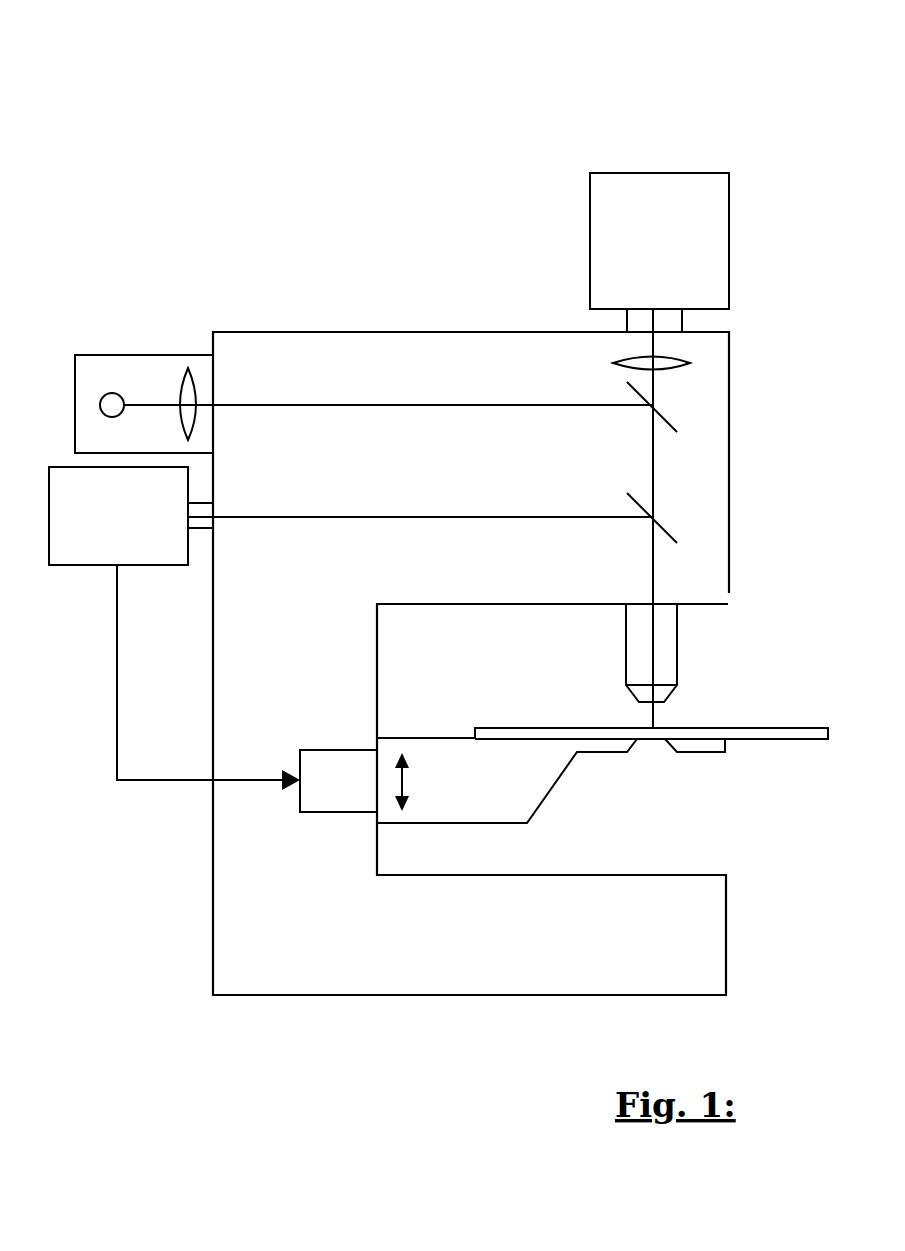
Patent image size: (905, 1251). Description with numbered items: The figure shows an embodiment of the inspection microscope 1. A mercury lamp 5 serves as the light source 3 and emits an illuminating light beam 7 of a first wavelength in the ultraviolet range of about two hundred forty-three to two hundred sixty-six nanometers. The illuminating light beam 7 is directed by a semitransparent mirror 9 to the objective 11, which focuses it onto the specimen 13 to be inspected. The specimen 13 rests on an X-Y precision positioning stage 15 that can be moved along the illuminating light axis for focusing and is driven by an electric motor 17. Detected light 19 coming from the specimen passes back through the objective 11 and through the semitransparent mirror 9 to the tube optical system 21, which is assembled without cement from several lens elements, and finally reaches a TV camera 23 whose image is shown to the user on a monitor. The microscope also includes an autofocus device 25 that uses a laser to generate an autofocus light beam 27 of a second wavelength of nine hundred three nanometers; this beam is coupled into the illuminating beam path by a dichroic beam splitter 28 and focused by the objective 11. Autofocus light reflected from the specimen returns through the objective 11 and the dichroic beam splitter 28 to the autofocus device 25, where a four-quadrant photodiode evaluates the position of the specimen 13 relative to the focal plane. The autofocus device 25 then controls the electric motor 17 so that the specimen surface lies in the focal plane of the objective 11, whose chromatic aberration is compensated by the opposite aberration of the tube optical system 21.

The inspection microscope 1 is at (351, 118).
The light source 3 is at (72, 300).
The mercury lamp 5 is at (125, 368).
The illuminating light beam 7 is at (342, 405).
The semitransparent mirror 9 is at (663, 420).
The objective 11 is at (637, 655).
The specimen 13 is at (793, 727).
The X-Y precision positioning stage 15 is at (513, 788).
The electric motor 17 is at (337, 775).
The detected light 19 is at (653, 480).
The tube optical system 21 is at (660, 365).
The TV camera 23 is at (602, 210).
The autofocus device 25 is at (87, 553).
The autofocus light beam 27 is at (337, 517).
The dichroic beam splitter 28 is at (667, 530).